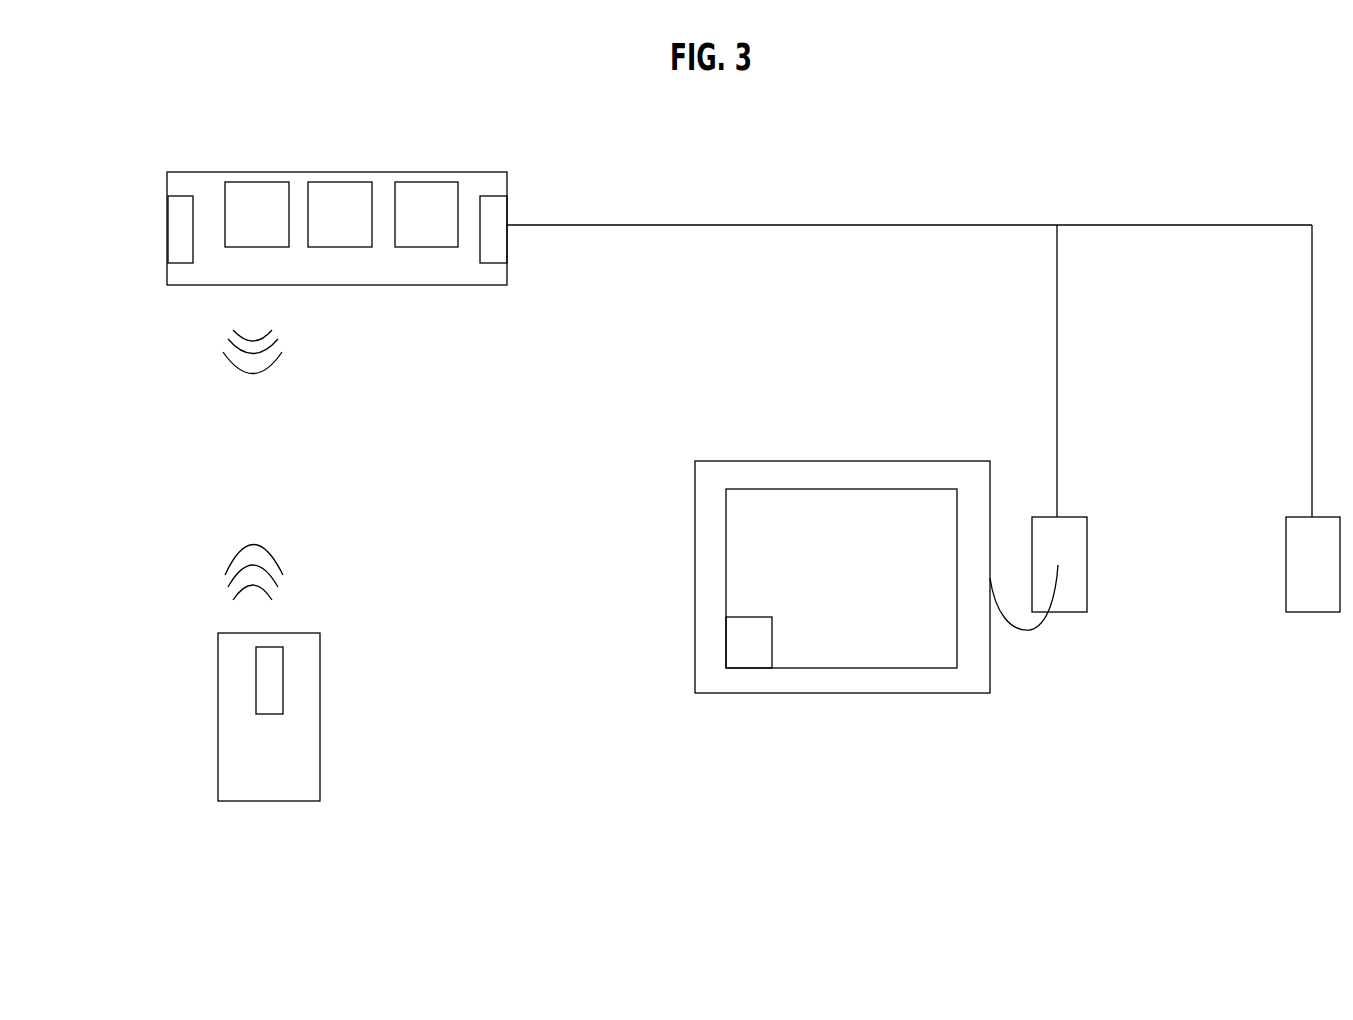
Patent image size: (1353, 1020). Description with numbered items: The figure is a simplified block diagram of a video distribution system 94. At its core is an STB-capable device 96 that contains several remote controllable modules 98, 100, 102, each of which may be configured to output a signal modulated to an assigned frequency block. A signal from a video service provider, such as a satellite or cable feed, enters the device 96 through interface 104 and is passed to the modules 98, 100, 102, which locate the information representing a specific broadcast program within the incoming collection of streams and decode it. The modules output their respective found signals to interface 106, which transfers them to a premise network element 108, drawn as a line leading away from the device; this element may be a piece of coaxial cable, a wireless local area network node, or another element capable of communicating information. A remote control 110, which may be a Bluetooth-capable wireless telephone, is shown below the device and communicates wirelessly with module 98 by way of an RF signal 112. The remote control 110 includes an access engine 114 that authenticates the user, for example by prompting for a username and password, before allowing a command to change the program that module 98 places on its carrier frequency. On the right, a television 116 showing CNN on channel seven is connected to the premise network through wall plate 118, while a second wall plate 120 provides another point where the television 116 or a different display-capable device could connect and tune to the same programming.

The video distribution system 94 is at (1050, 150).
The STB-capable device 96 is at (420, 162).
The remote controllable module 98 is at (242, 222).
The remote controllable module 100 is at (318, 222).
The remote controllable module 102 is at (404, 222).
The interface 104 is at (160, 208).
The interface 106 is at (525, 208).
The premise network element 108 is at (872, 225).
The remote control 110 is at (247, 777).
The RF signal 112 is at (227, 485).
The access engine 114 is at (292, 672).
The television 116 is at (835, 442).
The wall plate 118 is at (1087, 517).
The wall plate 120 is at (1292, 594).